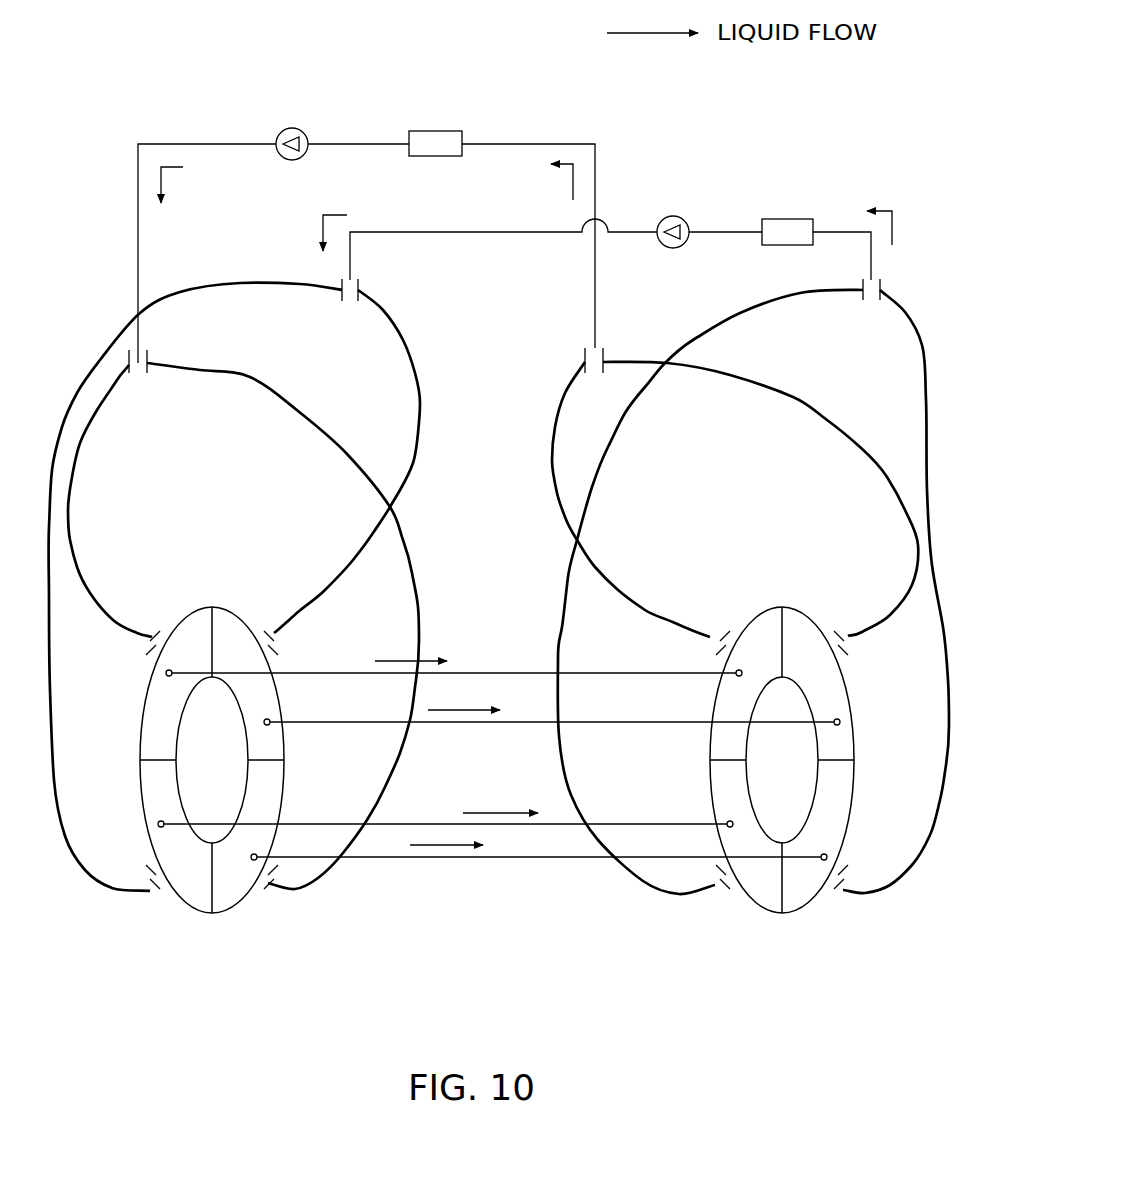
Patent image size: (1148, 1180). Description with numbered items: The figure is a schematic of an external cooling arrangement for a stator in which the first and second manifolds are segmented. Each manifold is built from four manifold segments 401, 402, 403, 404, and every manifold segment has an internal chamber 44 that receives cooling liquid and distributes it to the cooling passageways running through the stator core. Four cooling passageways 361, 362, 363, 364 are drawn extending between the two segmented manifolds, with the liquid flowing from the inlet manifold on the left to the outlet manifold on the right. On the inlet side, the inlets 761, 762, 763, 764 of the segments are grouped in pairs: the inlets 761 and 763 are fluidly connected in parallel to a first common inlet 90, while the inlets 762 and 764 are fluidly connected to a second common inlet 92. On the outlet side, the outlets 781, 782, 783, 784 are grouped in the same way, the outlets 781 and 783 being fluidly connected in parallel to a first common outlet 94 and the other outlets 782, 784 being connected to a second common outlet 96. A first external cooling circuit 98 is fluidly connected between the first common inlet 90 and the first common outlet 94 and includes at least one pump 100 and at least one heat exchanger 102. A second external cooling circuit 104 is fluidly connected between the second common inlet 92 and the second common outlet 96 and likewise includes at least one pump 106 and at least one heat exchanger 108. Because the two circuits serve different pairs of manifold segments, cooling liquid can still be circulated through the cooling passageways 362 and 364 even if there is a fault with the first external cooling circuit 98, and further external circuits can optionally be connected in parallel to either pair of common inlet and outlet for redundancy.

The cooling passageway 361 is at (471, 672).
The cooling passageway 362 is at (447, 824).
The cooling passageway 363 is at (538, 857).
The cooling passageway 364 is at (533, 722).
The manifold segment 401 is at (142, 664).
The manifold segment 402 is at (197, 923).
The manifold segment 403 is at (228, 923).
The manifold segment 404 is at (235, 601).
The internal chamber 44 is at (157, 693).
The inlet 761 is at (157, 636).
The inlet 762 is at (165, 884).
The inlet 763 is at (260, 884).
The inlet 764 is at (262, 633).
The outlet 781 is at (733, 633).
The outlet 782 is at (732, 885).
The outlet 783 is at (833, 885).
The outlet 784 is at (837, 650).
The first common inlet 90 is at (150, 362).
The second common inlet 92 is at (362, 288).
The first common outlet 94 is at (583, 357).
The second common outlet 96 is at (860, 284).
The first external cooling circuit 98 is at (137, 202).
The pump 100 is at (291, 128).
The heat exchanger 102 is at (437, 131).
The second external cooling circuit 104 is at (737, 231).
The pump 106 is at (672, 216).
The heat exchanger 108 is at (787, 219).